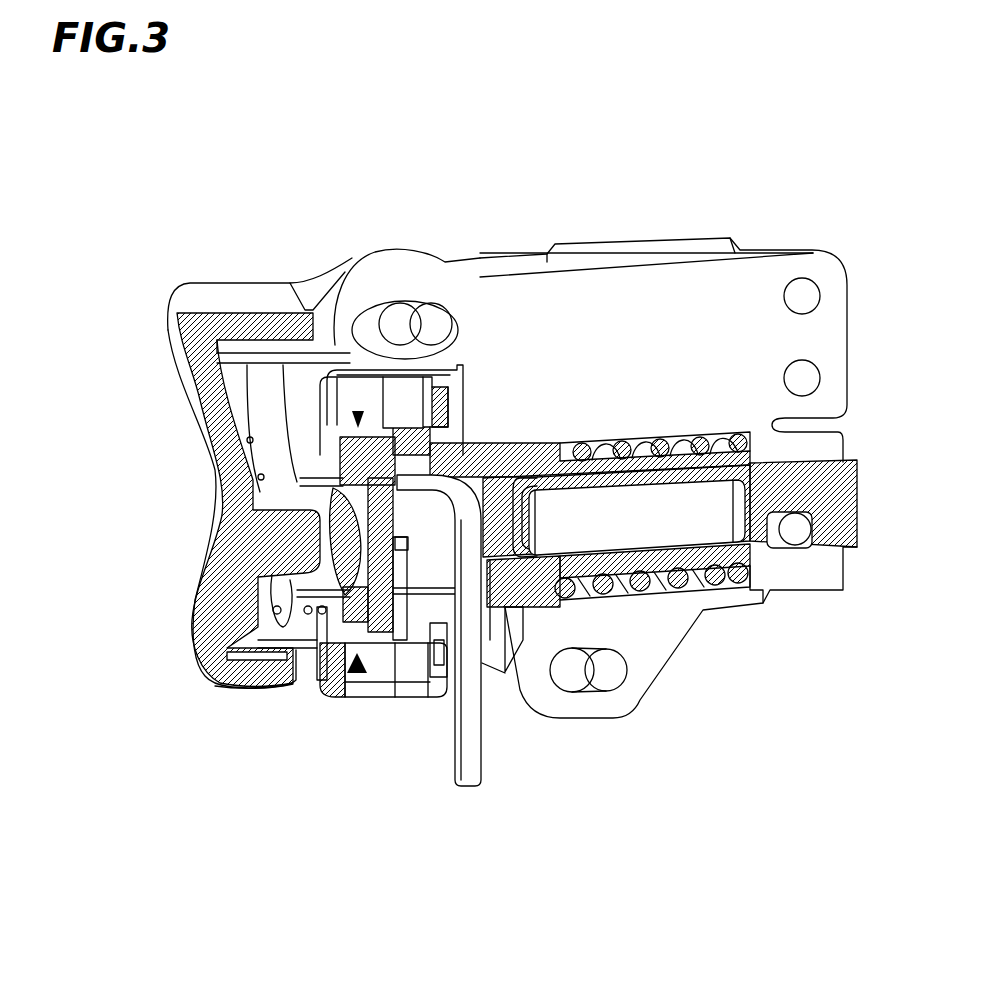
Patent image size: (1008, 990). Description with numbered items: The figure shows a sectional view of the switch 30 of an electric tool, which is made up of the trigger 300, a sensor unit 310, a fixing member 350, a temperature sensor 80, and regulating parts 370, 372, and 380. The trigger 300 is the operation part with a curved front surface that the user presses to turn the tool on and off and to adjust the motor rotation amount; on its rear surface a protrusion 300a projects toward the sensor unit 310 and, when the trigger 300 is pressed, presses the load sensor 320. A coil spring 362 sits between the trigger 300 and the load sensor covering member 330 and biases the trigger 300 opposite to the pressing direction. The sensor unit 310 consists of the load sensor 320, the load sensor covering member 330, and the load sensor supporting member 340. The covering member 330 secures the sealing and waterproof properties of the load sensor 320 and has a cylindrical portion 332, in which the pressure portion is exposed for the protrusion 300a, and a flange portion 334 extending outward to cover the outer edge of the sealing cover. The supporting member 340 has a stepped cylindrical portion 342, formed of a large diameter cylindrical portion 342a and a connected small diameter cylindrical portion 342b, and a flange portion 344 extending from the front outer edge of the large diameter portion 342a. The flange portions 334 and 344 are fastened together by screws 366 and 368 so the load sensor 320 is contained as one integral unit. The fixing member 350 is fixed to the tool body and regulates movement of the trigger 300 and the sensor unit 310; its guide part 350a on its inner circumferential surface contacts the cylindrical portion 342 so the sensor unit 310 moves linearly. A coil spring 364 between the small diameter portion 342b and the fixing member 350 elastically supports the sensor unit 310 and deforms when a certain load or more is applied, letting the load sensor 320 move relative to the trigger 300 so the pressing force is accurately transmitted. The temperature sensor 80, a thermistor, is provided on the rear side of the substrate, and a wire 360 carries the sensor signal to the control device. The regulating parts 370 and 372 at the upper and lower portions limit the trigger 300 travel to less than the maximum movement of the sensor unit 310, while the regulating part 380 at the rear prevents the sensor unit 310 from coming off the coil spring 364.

The switch 30 is at (832, 208).
The temperature sensor 80 is at (389, 642).
The trigger 300 is at (218, 494).
The protrusion 300a is at (240, 668).
The sensor unit 310 is at (355, 690).
The load sensor 320 is at (328, 478).
The load sensor covering member 330 is at (320, 810).
The cylindrical portion 332 is at (292, 657).
The flange portion 334 is at (332, 675).
The load sensor supporting member 340 is at (712, 101).
The cylindrical portion 342 is at (712, 152).
The large diameter cylindrical portion 342a is at (544, 440).
The small diameter cylindrical portion 342b is at (624, 440).
The flange portion 344 is at (472, 445).
The fixing member 350 is at (752, 283).
The guide part 350a is at (540, 612).
The wire 360 is at (480, 770).
The coil spring 362 is at (350, 482).
The coil spring 364 is at (747, 586).
The screw 366 is at (406, 405).
The screw 368 is at (440, 678).
The regulating part 370 is at (433, 280).
The regulating part 372 is at (620, 712).
The regulating part 380 is at (803, 575).